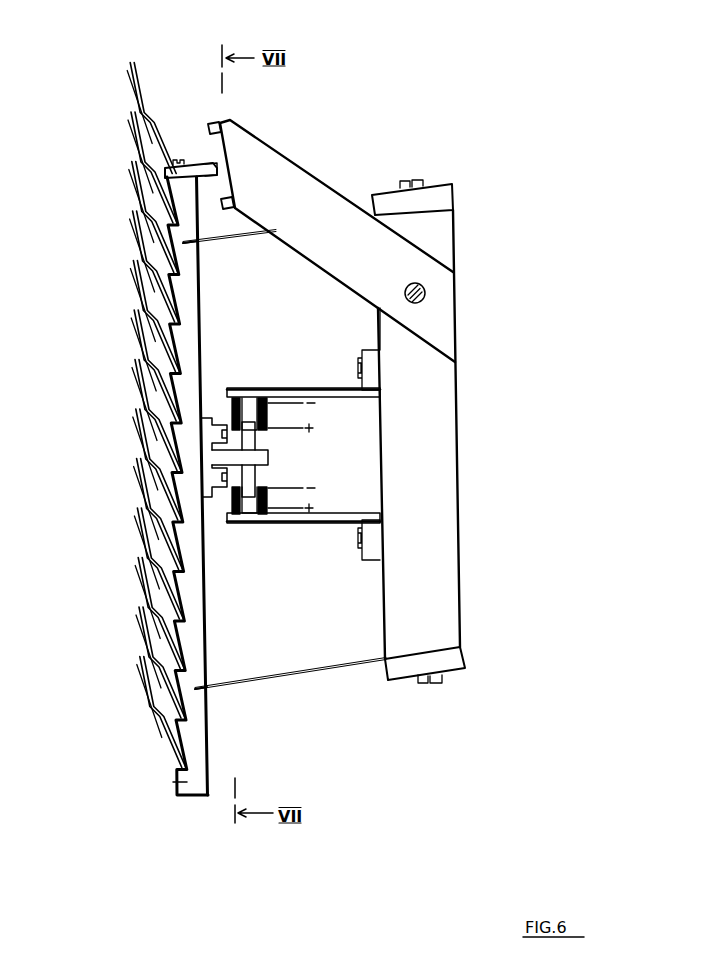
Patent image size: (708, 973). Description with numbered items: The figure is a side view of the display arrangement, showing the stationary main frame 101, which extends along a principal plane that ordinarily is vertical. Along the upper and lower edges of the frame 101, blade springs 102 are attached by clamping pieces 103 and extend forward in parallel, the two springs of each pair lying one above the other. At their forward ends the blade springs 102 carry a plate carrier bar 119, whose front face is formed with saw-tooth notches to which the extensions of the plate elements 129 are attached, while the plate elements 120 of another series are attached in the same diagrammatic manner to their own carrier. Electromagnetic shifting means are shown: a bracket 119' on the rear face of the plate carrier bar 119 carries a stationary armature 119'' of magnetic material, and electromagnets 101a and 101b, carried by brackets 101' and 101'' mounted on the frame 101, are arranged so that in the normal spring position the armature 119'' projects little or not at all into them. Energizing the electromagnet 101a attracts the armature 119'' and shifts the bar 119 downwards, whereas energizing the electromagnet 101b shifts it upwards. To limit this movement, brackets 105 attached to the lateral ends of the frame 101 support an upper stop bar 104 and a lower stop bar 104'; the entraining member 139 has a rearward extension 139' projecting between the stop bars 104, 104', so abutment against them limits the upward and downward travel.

The stationary main frame 101 is at (443, 434).
The bracket 101' is at (303, 538).
The bracket 101'' is at (303, 373).
The electromagnet 101a is at (250, 505).
The electromagnet 101b is at (248, 406).
The blade spring 102 is at (251, 239).
The clamping piece 103 is at (436, 200).
The upper stop bar 104 is at (193, 115).
The lower stop bar 104' is at (222, 237).
The bracket 105 is at (263, 158).
The plate carrier bar 119 is at (159, 486).
The bracket 119' is at (273, 443).
The armature 119'' is at (290, 480).
The plate element 120 is at (129, 63).
The plate element 129 is at (128, 87).
The entraining member 139 is at (191, 155).
The rearward extension 139' is at (215, 181).